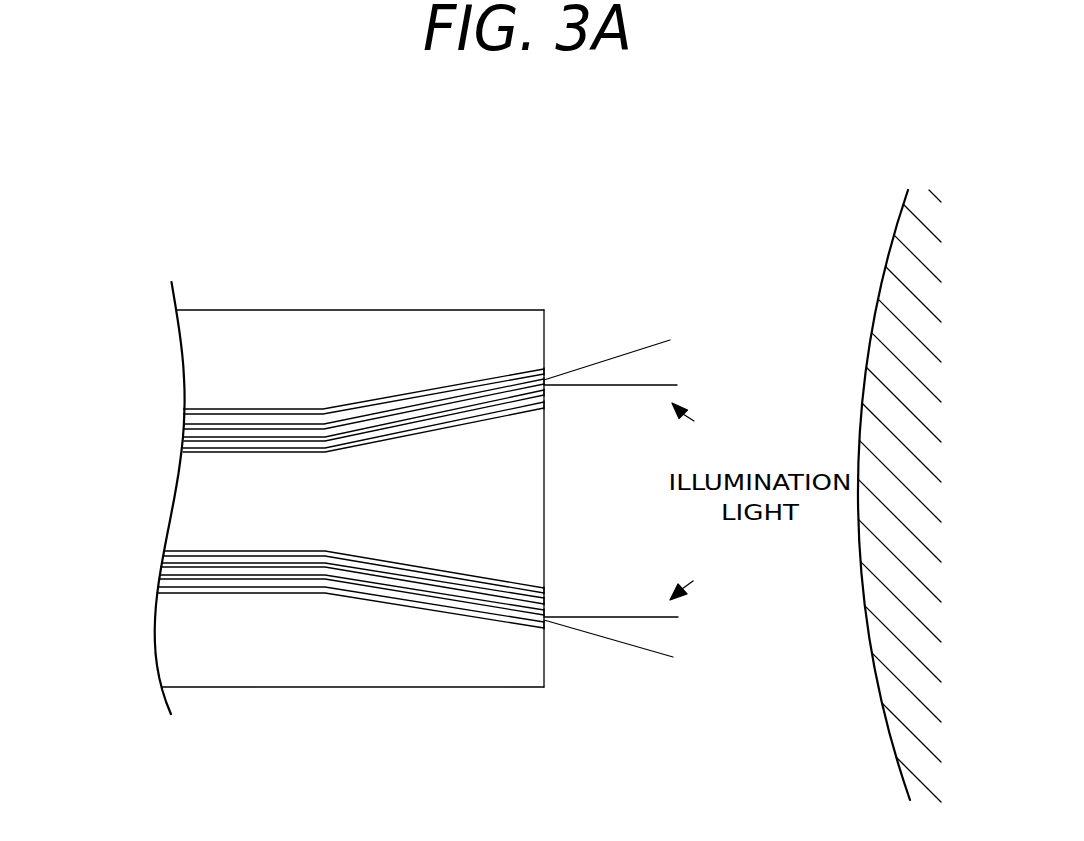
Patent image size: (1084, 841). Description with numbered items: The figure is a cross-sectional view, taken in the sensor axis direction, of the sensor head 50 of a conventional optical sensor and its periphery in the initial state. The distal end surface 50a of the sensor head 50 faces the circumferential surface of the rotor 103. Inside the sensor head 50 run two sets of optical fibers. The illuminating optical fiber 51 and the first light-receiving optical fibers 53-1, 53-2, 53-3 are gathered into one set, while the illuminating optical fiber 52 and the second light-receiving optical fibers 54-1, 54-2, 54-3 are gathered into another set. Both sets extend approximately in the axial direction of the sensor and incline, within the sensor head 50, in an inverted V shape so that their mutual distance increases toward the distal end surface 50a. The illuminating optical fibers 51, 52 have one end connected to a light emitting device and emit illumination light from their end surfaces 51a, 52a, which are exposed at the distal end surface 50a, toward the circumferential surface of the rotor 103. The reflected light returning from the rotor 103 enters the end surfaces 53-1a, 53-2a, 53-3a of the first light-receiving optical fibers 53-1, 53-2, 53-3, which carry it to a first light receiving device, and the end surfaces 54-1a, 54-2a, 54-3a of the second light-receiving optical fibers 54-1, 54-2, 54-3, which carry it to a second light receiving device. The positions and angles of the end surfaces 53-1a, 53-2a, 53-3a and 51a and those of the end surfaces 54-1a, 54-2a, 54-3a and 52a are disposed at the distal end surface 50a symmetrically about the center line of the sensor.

The sensor head 50 is at (289, 293).
The distal end surface 50a is at (547, 673).
The illuminating optical fiber 51 is at (183, 409).
The end surface (light emitting portion) 51a is at (546, 382).
The illuminating optical fiber 52 is at (196, 585).
The end surface (light emitting portion) 52a is at (546, 622).
The first light-receiving optical fiber 53-1 is at (198, 410).
The first light-receiving optical fiber 53-2 is at (194, 446).
The first light-receiving optical fiber 53-3 is at (198, 453).
The end surface 53-1a is at (546, 370).
The end surface 53-2a is at (546, 395).
The end surface 53-3a is at (546, 408).
The second light-receiving optical fiber 54-1 is at (194, 550).
The second light-receiving optical fiber 54-2 is at (189, 564).
The second light-receiving optical fiber 54-3 is at (200, 598).
The end surface (light receiving portion) 54-1a is at (546, 590).
The end surface (light receiving portion) 54-2a is at (546, 604).
The end surface (light receiving portion) 54-3a is at (546, 630).
The rotor 103 is at (904, 292).